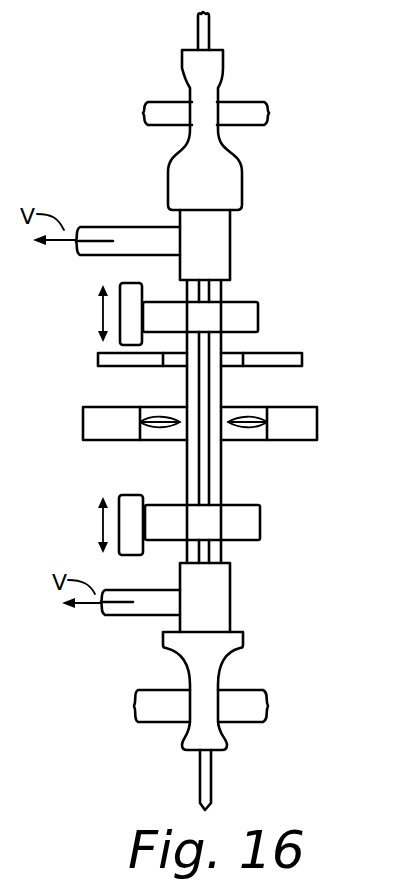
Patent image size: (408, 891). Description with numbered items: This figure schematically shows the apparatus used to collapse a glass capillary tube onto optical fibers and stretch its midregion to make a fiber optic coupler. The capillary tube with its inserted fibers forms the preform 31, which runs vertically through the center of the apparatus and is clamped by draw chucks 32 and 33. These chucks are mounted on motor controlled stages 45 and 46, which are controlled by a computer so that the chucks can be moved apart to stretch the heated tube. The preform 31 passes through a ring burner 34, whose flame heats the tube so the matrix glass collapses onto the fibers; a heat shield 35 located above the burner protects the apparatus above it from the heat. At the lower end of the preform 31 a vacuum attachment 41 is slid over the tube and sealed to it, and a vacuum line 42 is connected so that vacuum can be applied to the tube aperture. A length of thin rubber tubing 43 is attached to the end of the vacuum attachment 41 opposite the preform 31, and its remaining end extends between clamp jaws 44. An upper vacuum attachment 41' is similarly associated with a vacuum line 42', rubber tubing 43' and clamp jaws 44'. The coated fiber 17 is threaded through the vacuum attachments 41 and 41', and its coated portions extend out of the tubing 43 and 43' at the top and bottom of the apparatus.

The coated fiber 17 is at (211, 25).
The preform 31 is at (222, 472).
The draw chuck 32 is at (259, 315).
The draw chuck 33 is at (262, 522).
The ring burner 34 is at (292, 407).
The heat shield 35 is at (284, 353).
The vacuum attachment 41 is at (231, 597).
The upper vacuum attachment 41' is at (234, 245).
The vacuum line 42 is at (127, 623).
The vacuum line 42' is at (128, 217).
The thin rubber tubing 43 is at (226, 691).
The thin rubber tubing 43' is at (234, 130).
The clamp jaws 44 is at (202, 706).
The clamp jaws 44' is at (207, 108).
The motor controlled stage 45 is at (122, 283).
The motor controlled stage 46 is at (128, 495).